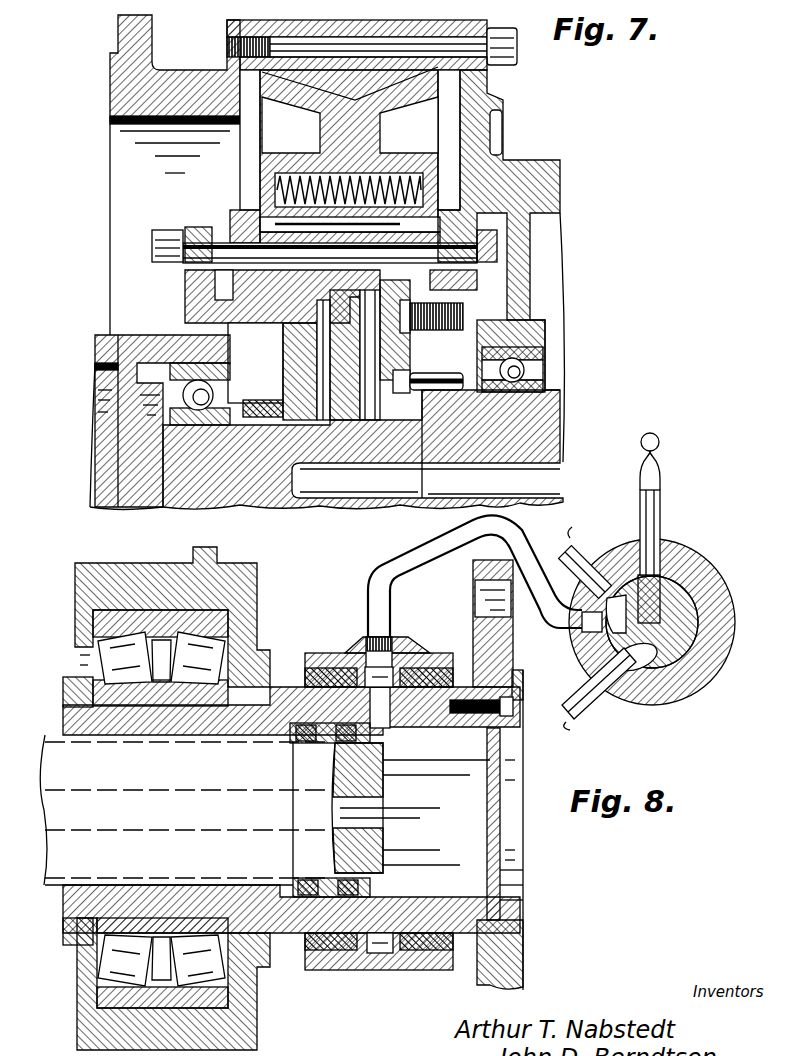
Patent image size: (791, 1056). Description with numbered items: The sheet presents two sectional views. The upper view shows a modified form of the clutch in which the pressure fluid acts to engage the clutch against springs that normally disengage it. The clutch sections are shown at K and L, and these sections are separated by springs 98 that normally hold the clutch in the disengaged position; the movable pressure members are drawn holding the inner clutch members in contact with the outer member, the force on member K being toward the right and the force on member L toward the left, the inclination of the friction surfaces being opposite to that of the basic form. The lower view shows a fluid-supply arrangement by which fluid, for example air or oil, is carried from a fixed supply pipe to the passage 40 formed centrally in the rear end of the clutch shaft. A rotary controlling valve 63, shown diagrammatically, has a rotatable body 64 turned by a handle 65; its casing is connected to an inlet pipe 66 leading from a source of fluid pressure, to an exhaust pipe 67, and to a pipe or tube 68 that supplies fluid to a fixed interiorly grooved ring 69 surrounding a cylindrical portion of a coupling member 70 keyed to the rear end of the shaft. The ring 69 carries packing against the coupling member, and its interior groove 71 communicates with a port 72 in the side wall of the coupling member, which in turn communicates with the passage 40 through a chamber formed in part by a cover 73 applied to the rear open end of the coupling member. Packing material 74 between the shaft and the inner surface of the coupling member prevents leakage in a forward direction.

In FIG. 7, the clutch section K is at (320, 122).
In FIG. 7, the clutch section L is at (382, 122).
In FIG. 7, the springs 98 is at (420, 183).
In FIG. 8, the passage 40 is at (383, 812).
In FIG. 8, the rotary controlling valve 63 is at (712, 580).
In FIG. 8, the rotatable body 64 is at (677, 613).
In FIG. 8, the handle 65 is at (662, 530).
In FIG. 8, the inlet pipe 66 is at (590, 552).
In FIG. 8, the exhaust pipe 67 is at (574, 693).
In FIG. 8, the pipe or tube 68 is at (420, 578).
In FIG. 8, the fixed interiorly grooved ring 69 is at (362, 641).
In FIG. 8, the coupling member 70 is at (483, 652).
In FIG. 8, the groove 71 is at (392, 668).
In FIG. 8, the port 72 is at (380, 718).
In FIG. 8, the cover 73 is at (490, 828).
In FIG. 8, the packing material 74 is at (313, 727).